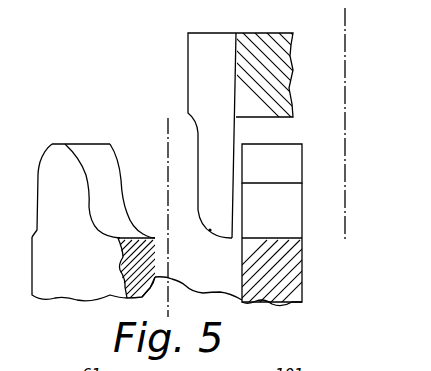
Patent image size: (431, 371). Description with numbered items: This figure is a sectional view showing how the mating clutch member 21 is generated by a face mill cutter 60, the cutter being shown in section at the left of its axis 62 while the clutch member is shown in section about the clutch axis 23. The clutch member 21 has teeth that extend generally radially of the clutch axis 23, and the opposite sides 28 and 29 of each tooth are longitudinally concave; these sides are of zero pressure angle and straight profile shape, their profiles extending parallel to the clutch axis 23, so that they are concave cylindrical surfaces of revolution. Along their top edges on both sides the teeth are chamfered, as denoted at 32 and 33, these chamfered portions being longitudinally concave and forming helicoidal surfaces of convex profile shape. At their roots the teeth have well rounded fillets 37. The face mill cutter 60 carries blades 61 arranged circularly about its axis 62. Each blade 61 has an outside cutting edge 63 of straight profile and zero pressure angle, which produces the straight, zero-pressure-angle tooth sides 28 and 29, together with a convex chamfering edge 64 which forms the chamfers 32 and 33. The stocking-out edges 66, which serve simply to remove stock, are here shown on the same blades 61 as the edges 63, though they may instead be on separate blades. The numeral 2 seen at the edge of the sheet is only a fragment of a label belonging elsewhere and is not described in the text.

The partial reference (cut off) 2 is at (4, 87).
The mating clutch member 21 is at (73, 283).
The clutch axis 23 is at (169, 253).
The tooth side 28 is at (110, 200).
The tooth side 29 is at (37, 202).
The chamfered portion 32 is at (93, 143).
The chamfered portion 33 is at (45, 153).
The fillet 37 is at (97, 230).
The face mill cutter 60 is at (268, 40).
The blade 61 is at (200, 70).
The cutter axis 62 is at (345, 110).
The outside cutting edge 63 is at (198, 165).
The convex chamfering edge 64 is at (217, 240).
The stocking-out edge 66 is at (237, 163).